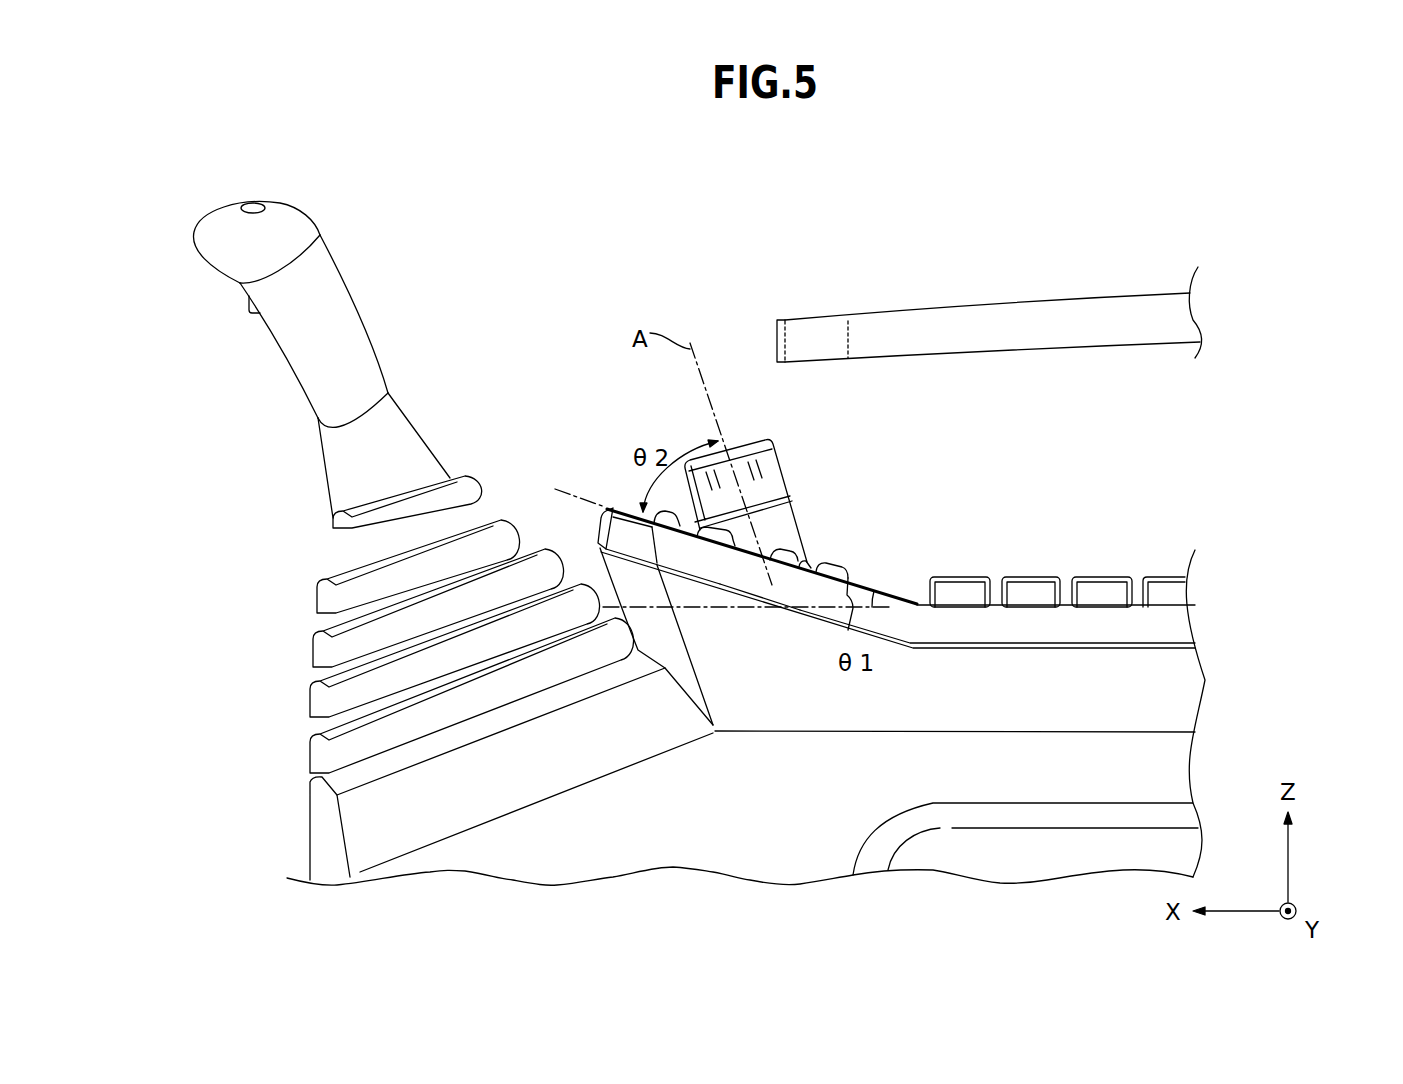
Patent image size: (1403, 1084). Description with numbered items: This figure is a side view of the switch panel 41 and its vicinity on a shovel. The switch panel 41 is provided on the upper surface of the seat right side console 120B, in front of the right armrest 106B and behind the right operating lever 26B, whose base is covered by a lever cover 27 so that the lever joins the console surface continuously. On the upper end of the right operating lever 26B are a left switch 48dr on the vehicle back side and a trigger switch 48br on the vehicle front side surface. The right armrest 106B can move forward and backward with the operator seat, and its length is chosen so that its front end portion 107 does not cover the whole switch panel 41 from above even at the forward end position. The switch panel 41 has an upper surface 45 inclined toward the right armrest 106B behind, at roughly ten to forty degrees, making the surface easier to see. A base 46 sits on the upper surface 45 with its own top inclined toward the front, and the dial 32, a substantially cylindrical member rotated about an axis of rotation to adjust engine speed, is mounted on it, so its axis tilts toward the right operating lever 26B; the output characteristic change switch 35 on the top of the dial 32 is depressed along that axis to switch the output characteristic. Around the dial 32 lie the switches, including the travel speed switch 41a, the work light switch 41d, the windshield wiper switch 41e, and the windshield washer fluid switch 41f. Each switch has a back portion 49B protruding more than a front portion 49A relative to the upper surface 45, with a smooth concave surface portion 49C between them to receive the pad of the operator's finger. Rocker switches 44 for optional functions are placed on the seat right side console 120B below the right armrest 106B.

The right operating lever 26B is at (296, 217).
The left switch 48dr is at (252, 203).
The trigger switch 48br is at (258, 317).
The lever cover 27 is at (307, 657).
The seat right side console 120B is at (1160, 623).
The switch panel 41 is at (810, 497).
The switch 41a is at (627, 507).
The switch 41d is at (690, 520).
The switch 41e is at (790, 530).
The switch 41f is at (823, 553).
The upper surface 45 is at (875, 592).
The base 46 is at (790, 500).
The front portion 49A is at (800, 565).
The concave surface portion 49C is at (833, 562).
The back portion 49B is at (847, 568).
The dial 32 is at (777, 470).
The output characteristic change switch 35 is at (750, 445).
The rocker switches 44 is at (1167, 577).
The right armrest 106B is at (977, 313).
The front end portion 107 is at (777, 337).